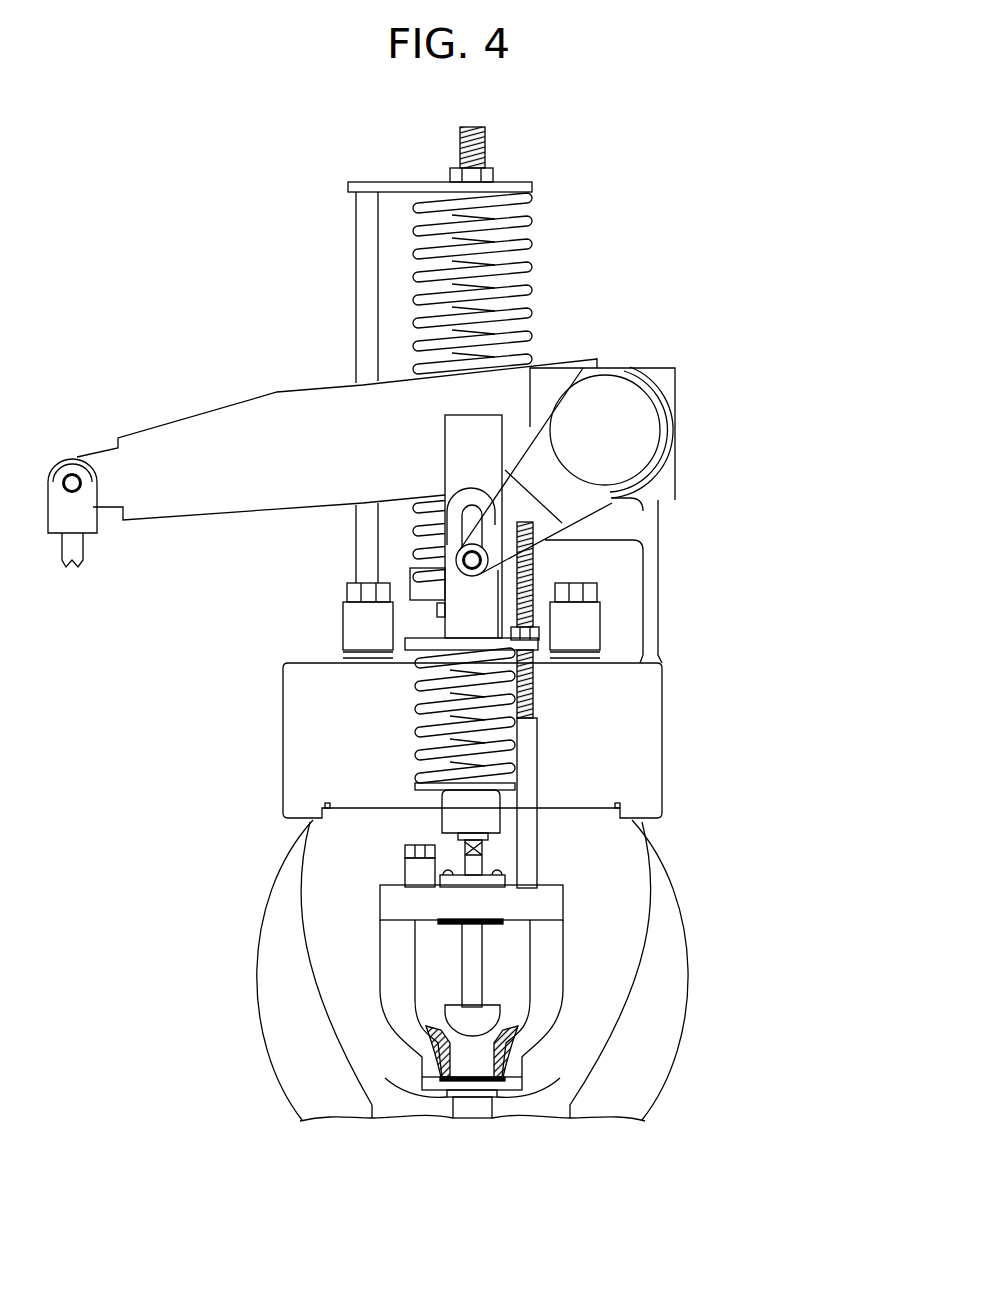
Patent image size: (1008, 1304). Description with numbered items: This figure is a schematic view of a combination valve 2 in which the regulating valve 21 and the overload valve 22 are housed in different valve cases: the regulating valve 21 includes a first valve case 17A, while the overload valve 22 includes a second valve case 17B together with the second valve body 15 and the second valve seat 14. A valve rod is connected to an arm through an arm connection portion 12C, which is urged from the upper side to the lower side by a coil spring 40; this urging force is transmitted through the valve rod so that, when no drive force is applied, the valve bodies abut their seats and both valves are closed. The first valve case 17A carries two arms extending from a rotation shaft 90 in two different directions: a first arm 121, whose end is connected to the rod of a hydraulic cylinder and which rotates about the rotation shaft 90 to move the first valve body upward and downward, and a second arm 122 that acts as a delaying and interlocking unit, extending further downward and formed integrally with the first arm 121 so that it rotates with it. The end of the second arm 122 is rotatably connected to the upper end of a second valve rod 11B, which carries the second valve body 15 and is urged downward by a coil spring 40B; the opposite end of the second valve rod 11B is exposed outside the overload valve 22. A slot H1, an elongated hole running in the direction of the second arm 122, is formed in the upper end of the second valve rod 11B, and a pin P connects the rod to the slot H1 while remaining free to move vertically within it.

The combination valve 2 is at (593, 188).
The coil spring 40 is at (525, 292).
The first arm 121 is at (238, 410).
The rotation shaft 90 is at (657, 422).
The second arm 122 is at (590, 505).
The pin P is at (480, 563).
The slot H1 is at (462, 522).
The arm connection portion 12C is at (457, 622).
The coil spring 40B is at (420, 728).
The second valve rod 11B is at (445, 820).
The second valve case 17B is at (562, 945).
The first valve case 17A is at (673, 960).
The second valve body 15 is at (457, 1017).
The second valve seat 14 is at (433, 1052).
The regulating valve 21 is at (683, 1045).
The overload valve 22 is at (547, 1027).